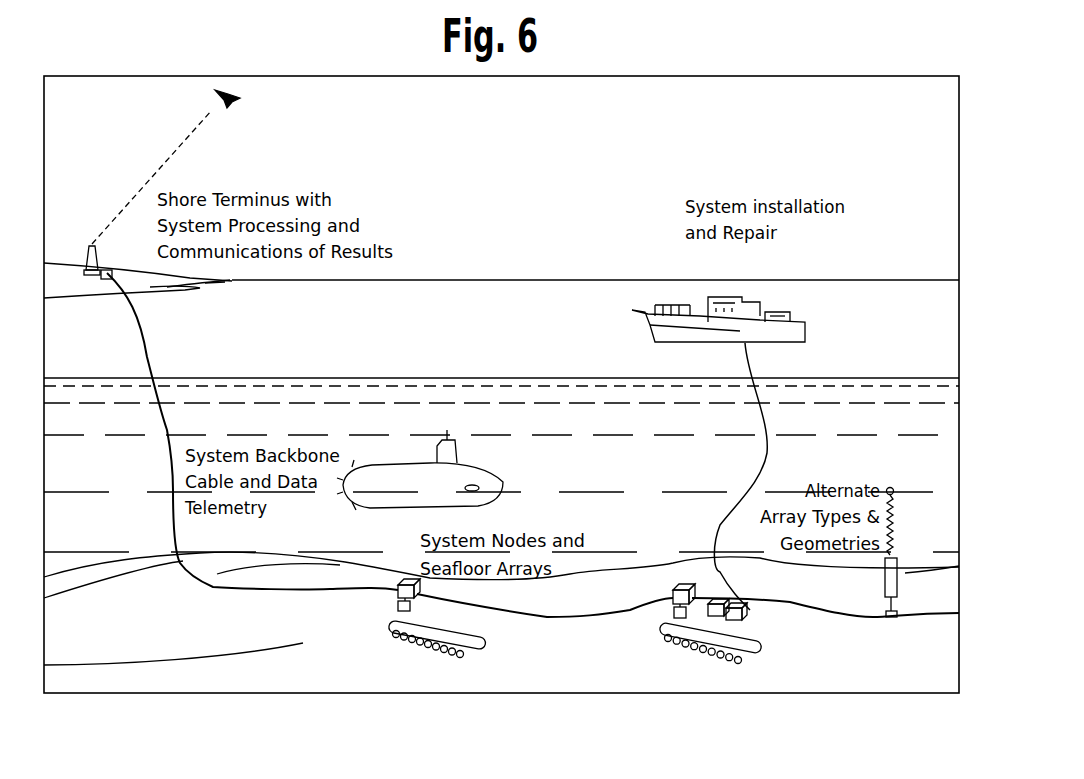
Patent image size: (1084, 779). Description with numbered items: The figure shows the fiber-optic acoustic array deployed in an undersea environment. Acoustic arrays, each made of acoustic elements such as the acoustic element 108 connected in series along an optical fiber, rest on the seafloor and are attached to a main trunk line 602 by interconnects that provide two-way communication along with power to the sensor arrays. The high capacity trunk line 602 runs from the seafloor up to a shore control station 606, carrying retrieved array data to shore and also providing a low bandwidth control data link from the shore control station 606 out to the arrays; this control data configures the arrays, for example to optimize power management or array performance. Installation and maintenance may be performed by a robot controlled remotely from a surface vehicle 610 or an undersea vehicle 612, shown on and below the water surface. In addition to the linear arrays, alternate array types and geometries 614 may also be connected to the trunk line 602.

The acoustic element 108 is at (747, 622).
The main trunk line 602 is at (193, 578).
The shore control station 606 is at (89, 246).
The surface vehicle 610 is at (798, 323).
The undersea vehicle 612 is at (487, 468).
The alternate array types and geometries 614 is at (897, 586).